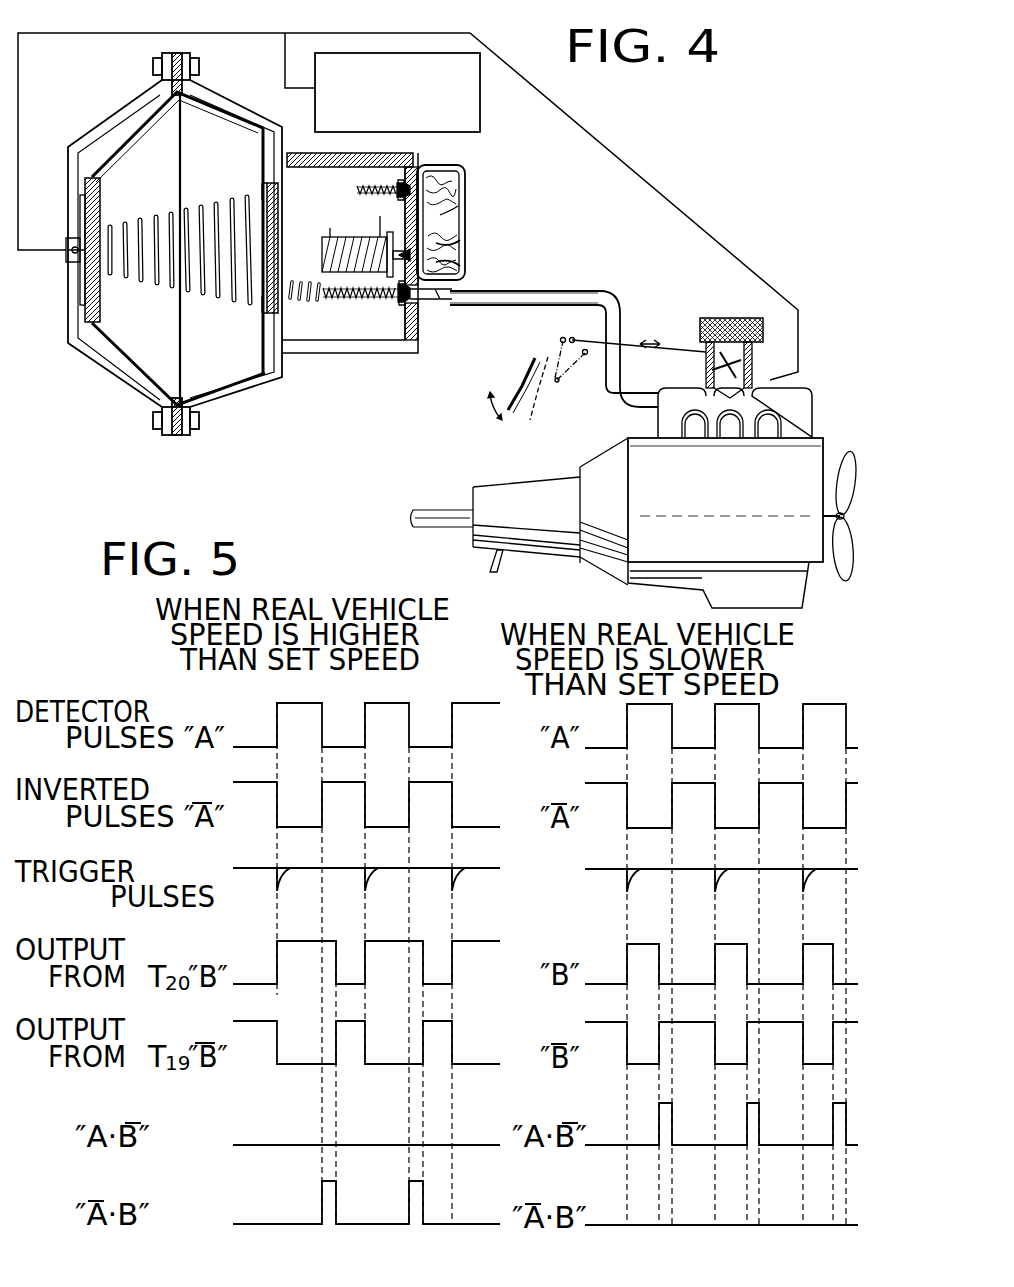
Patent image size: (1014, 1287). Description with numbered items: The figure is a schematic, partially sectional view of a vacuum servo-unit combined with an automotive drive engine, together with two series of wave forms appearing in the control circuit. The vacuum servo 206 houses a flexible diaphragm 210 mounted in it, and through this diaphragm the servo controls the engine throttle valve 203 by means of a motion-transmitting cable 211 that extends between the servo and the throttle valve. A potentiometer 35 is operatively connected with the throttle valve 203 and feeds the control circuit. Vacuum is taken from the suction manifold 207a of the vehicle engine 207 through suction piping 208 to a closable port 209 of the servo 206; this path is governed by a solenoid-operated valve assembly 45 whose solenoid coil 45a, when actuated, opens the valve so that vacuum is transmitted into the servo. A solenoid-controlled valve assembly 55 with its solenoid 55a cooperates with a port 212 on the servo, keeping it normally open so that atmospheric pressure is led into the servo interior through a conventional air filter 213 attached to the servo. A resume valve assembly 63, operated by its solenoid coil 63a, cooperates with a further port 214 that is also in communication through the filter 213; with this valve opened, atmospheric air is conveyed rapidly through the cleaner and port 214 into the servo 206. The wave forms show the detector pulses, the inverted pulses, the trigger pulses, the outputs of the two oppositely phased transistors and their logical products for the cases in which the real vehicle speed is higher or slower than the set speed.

The potentiometer 35 is at (480, 98).
The solenoid-operated valve assembly 45 is at (359, 310).
The solenoid coil 45a is at (417, 313).
The solenoid-controlled valve assembly 55 is at (356, 191).
The solenoid coil 55a is at (380, 183).
The resume valve assembly 63 is at (462, 266).
The solenoid coil 63a is at (466, 212).
The engine throttle valve 203 is at (745, 362).
The vacuum servo 206 is at (276, 384).
The vehicle engine 207 is at (596, 456).
The suction manifold 207a is at (675, 390).
The suction piping 208 is at (584, 289).
The closable port 209 is at (414, 302).
The flexible diaphragm 210 is at (125, 147).
The motion-transmitting cable 211 is at (617, 155).
The port 212 is at (438, 190).
The air filter 213 is at (382, 222).
The further port 214 is at (460, 246).